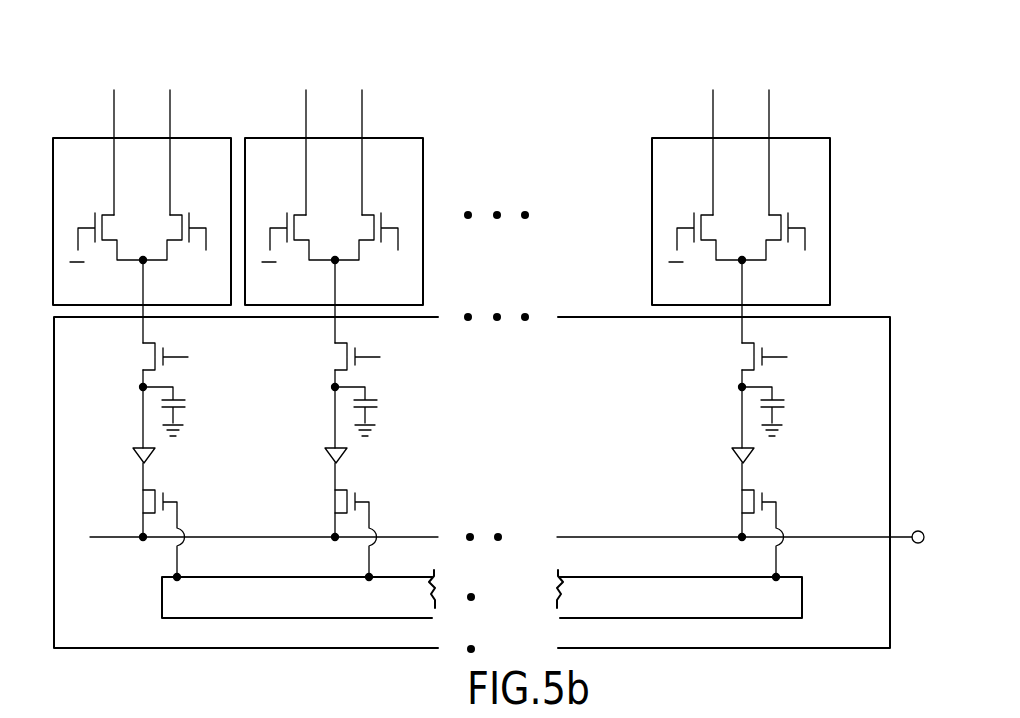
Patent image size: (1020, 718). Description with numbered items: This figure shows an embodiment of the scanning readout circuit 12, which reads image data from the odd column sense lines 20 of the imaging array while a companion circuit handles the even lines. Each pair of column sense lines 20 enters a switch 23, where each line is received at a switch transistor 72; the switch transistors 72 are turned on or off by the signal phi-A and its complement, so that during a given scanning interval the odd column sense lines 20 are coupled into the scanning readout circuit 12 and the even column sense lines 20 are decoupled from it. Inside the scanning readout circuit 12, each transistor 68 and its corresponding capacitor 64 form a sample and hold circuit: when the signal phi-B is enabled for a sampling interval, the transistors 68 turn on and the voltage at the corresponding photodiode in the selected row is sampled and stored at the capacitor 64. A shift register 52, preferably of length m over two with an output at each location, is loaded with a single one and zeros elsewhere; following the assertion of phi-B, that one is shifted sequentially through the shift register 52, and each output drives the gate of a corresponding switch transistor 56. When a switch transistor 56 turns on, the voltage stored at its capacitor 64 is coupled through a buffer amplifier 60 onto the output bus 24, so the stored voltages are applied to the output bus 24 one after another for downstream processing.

The scanning readout circuit 12 is at (890, 375).
The column sense lines 20 is at (448, 137).
The switches 23 is at (818, 137).
The output bus 24 is at (513, 521).
The shift register 52 is at (803, 598).
The switch transistor 56 is at (177, 503).
The buffer amplifier 60 is at (152, 460).
The capacitor 64 is at (180, 393).
The transistor 68 is at (152, 354).
The switch transistor 72 is at (799, 180).